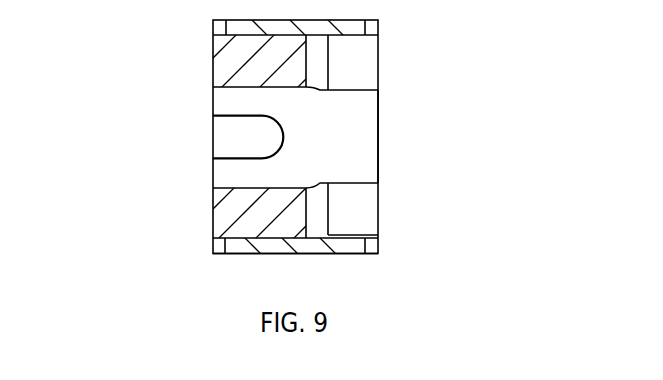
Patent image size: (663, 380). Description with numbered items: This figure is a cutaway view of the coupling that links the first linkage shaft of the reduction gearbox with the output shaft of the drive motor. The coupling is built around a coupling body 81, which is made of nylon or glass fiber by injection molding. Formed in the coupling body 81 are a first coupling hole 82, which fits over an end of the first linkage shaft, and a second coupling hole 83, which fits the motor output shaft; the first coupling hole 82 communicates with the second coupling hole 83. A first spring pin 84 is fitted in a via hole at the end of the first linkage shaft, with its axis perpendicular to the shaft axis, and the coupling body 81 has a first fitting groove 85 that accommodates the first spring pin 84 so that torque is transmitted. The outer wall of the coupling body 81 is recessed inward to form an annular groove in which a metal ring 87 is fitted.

The coupling body 81 is at (263, 62).
The first coupling hole 82 is at (340, 138).
The second coupling hole 83 is at (262, 169).
The first spring pin 84 is at (265, 129).
The first fitting groove 85 is at (340, 63).
The metal ring 87 is at (330, 246).